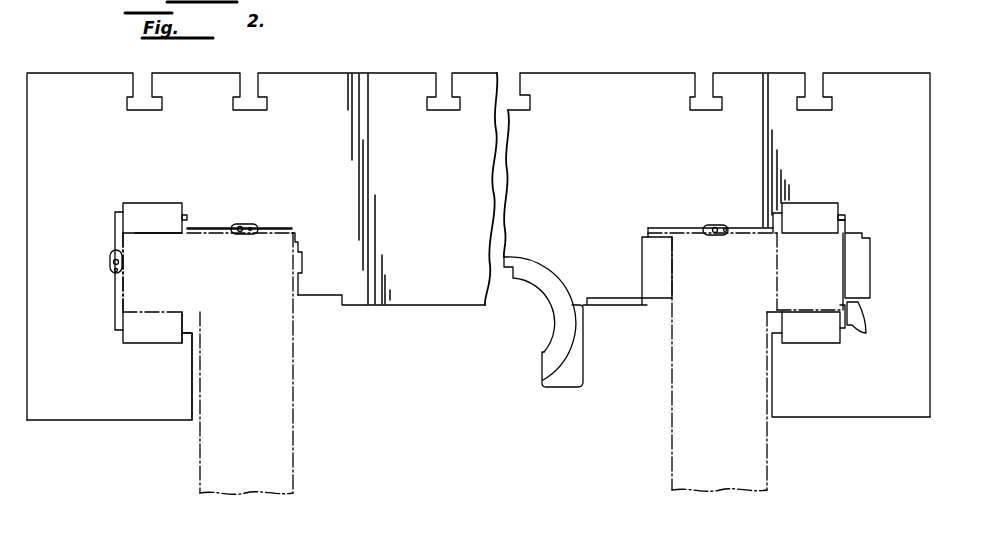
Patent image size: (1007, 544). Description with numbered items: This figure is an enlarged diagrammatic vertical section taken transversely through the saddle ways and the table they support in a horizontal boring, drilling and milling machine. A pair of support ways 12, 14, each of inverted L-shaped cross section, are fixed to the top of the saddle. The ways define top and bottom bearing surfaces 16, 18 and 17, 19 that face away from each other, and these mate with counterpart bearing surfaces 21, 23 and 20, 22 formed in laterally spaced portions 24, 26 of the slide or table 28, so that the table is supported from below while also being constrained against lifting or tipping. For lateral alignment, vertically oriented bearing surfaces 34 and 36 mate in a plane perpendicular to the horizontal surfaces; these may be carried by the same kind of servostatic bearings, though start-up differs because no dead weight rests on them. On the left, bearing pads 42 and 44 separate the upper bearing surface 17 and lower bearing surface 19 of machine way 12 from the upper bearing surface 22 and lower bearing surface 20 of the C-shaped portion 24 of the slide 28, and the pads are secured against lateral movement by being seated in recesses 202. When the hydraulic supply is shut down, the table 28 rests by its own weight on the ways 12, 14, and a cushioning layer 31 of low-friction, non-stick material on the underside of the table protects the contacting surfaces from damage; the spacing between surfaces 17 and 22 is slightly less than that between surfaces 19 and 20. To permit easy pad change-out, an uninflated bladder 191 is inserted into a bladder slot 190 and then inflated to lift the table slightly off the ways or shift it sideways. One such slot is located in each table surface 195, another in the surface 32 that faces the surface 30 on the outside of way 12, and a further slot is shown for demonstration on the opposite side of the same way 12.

The support way 12 is at (213, 428).
The support way 14 is at (678, 392).
The top bearing surface 16 is at (812, 234).
The upper bearing surface 17 is at (158, 233).
The bottom bearing surface 18 is at (812, 310).
The lower bearing surface 19 is at (146, 312).
The lower bearing surface 20 is at (156, 343).
The bearing surface 21 is at (815, 203).
The upper bearing surface 22 is at (165, 203).
The bearing surface 23 is at (823, 343).
The laterally spaced portion 24 is at (66, 204).
The laterally spaced portion 26 is at (906, 279).
The slide or table 28 is at (452, 188).
The surface 30 is at (122, 288).
The cushioning layer 31 is at (225, 228).
The surface 32 is at (113, 295).
The bearing surface 34 is at (843, 263).
The bearing surface 36 is at (870, 290).
The bearing pad 42 is at (121, 212).
The bearing pad 44 is at (642, 262).
The bladder slot 190 is at (110, 267).
The bladder 191 is at (110, 256).
The table surface 195 is at (289, 229).
The recess 202 is at (185, 215).